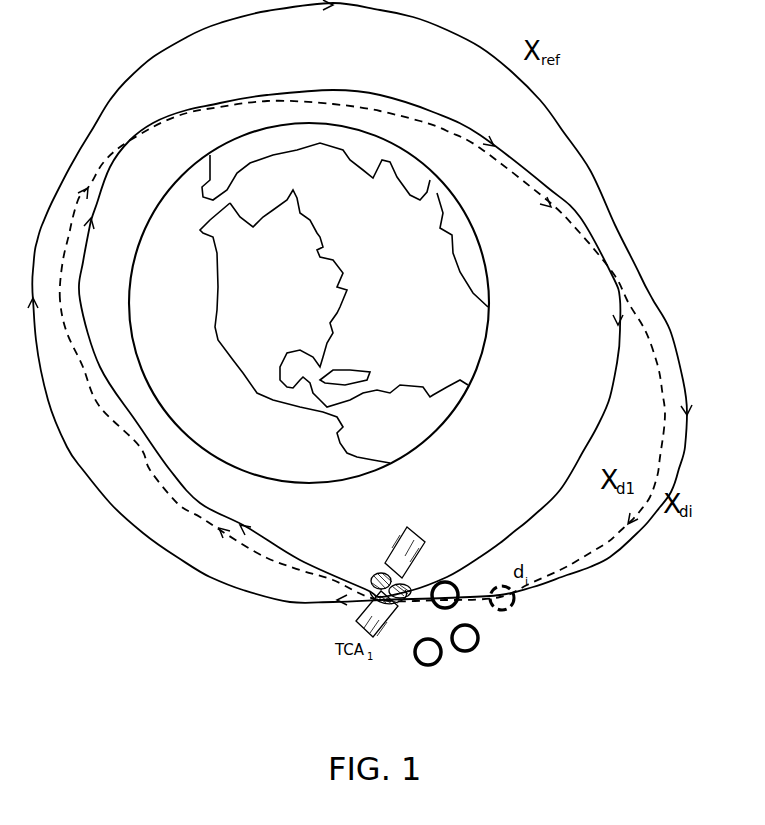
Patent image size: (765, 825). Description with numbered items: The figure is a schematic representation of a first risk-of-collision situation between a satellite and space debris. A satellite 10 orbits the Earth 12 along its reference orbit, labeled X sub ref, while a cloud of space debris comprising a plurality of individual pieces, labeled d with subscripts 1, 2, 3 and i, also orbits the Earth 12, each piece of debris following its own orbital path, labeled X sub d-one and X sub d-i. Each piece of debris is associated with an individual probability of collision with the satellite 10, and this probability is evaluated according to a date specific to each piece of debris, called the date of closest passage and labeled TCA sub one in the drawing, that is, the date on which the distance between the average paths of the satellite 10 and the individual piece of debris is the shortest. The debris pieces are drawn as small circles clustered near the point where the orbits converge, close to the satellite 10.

The satellite 10 is at (427, 526).
The Earth 12 is at (496, 337).
The miss distance d1 1 is at (459, 587).
The miss distance d2 2 is at (478, 641).
The miss distance d3 3 is at (439, 661).